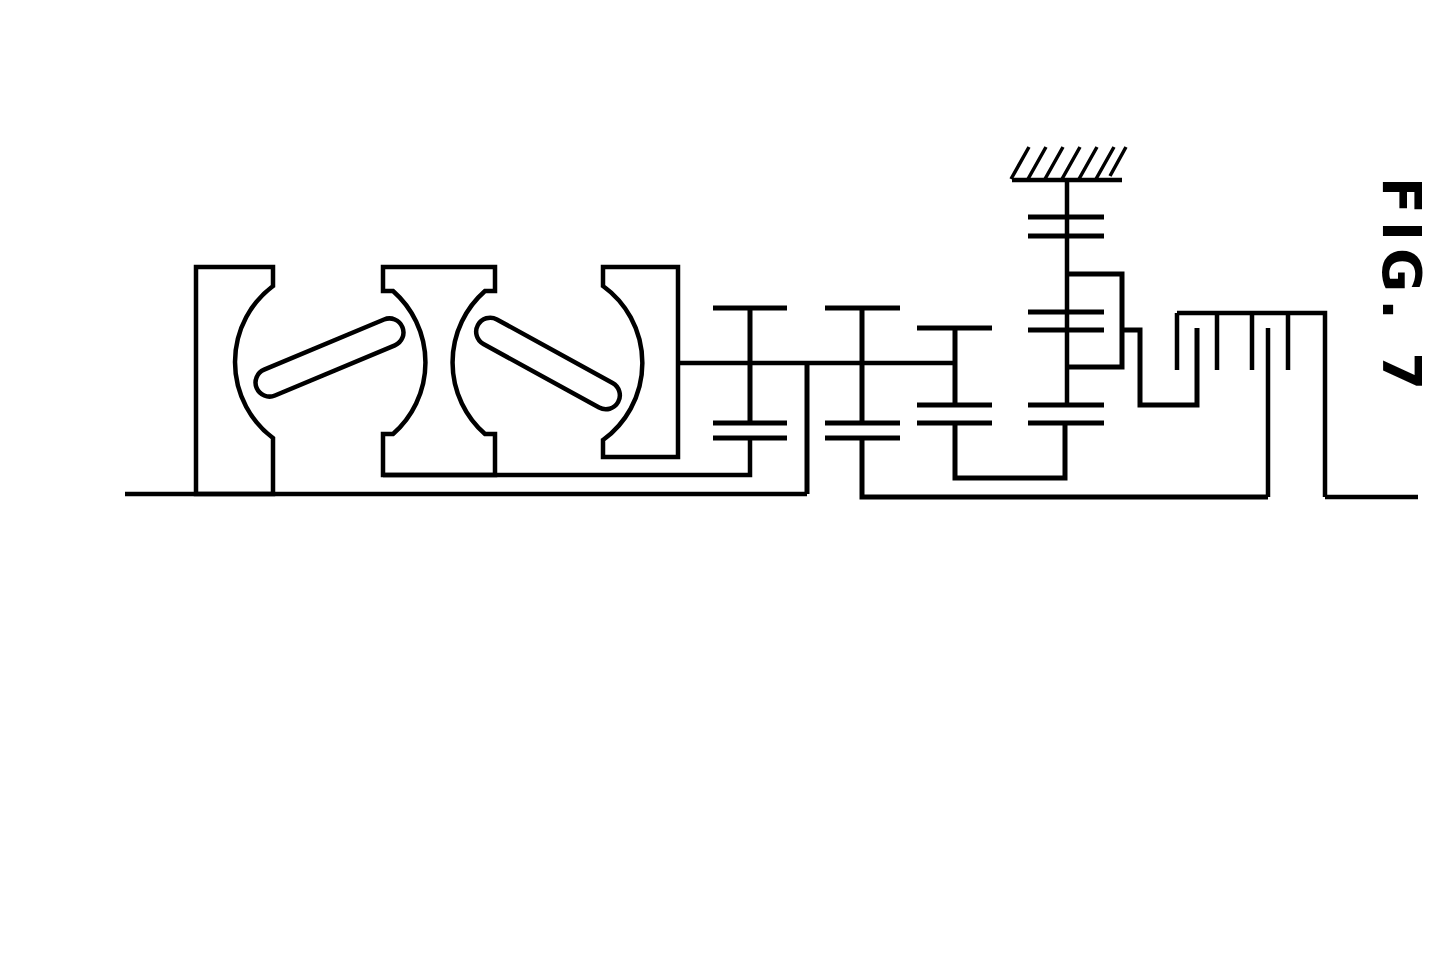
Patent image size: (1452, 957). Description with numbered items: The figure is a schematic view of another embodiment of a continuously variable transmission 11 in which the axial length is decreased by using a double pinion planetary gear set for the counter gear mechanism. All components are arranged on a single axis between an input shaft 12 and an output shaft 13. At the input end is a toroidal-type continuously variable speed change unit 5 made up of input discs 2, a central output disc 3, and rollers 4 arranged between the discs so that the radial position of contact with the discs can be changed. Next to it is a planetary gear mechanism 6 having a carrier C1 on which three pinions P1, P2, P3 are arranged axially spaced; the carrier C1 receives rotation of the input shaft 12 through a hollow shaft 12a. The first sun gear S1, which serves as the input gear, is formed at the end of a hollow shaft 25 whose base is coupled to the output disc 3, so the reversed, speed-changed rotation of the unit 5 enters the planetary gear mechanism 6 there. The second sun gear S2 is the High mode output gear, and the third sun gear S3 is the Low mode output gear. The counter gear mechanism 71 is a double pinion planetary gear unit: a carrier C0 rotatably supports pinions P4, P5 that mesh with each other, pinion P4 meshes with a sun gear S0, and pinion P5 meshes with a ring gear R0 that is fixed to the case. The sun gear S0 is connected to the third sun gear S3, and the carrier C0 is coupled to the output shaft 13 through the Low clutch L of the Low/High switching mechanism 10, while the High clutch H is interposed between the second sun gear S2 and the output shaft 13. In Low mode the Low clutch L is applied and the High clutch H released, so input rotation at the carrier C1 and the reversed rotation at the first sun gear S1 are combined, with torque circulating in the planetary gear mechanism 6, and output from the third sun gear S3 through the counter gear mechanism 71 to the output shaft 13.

The input discs 2 is at (240, 268).
The output disc 3 is at (442, 268).
The rollers 4 is at (328, 350).
The toroidal-type continuously variable speed change unit 5 is at (663, 143).
The planetary gear mechanism 6 is at (807, 250).
The Low/High switching mechanism 10 is at (1293, 267).
The continuously variable transmission 11 is at (737, 95).
The input shaft 12 is at (165, 493).
The hollow shaft 12a is at (520, 497).
The output shaft 13 is at (1355, 495).
The hollow shaft 25 is at (567, 480).
The counter gear mechanism 71 is at (1167, 240).
The pinion P1 is at (752, 307).
The pinion P2 is at (865, 307).
The pinion P3 is at (956, 327).
The pinion P4 is at (1052, 403).
The pinion P5 is at (1044, 241).
The first sun gear S1 is at (740, 442).
The second sun gear S2 is at (872, 442).
The third sun gear S3 is at (960, 428).
The sun gear S0 is at (1070, 428).
The carrier C1 is at (842, 362).
The carrier C0 is at (1100, 275).
The ring gear R0 is at (1085, 216).
The Low clutch L is at (1190, 312).
The High clutch H is at (1265, 312).